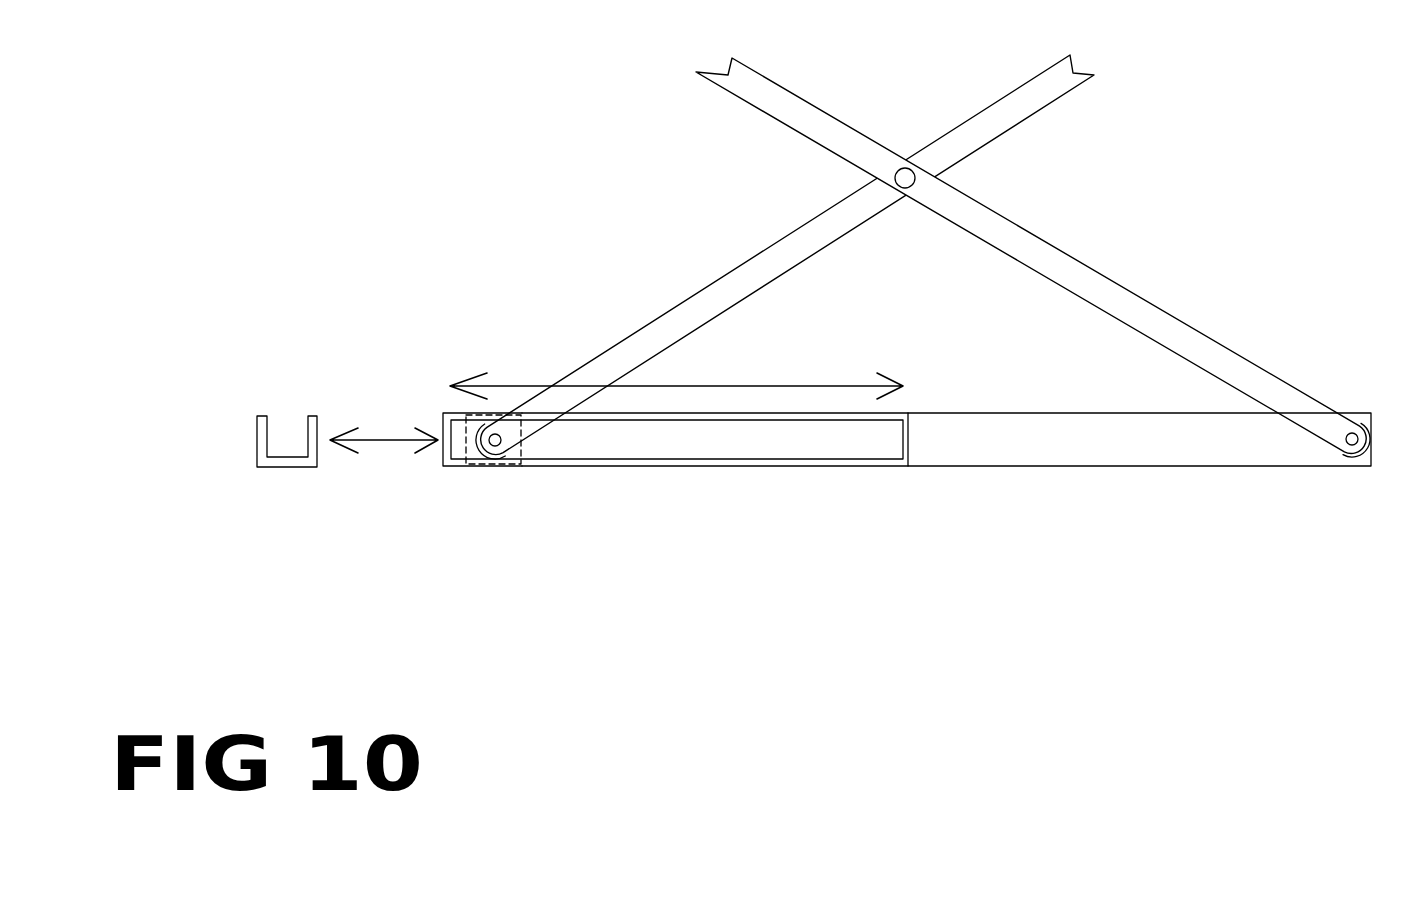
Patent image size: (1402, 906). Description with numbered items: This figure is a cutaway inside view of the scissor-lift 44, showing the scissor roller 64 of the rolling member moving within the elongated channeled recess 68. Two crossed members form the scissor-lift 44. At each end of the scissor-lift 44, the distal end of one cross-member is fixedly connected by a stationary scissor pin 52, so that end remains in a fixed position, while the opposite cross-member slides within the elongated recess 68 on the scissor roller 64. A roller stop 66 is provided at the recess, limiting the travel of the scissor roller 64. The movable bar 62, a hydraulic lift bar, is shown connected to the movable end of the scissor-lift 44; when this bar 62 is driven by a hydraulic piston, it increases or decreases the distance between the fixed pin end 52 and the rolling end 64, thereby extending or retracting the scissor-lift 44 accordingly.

The scissor-lift 44 is at (1075, 258).
The scissor pin 52 is at (1355, 445).
The hydraulic lift bar 62 is at (523, 448).
The scissor roller 64 is at (480, 460).
The roller stop 66 is at (440, 457).
The elongated channeled recess 68 is at (440, 417).